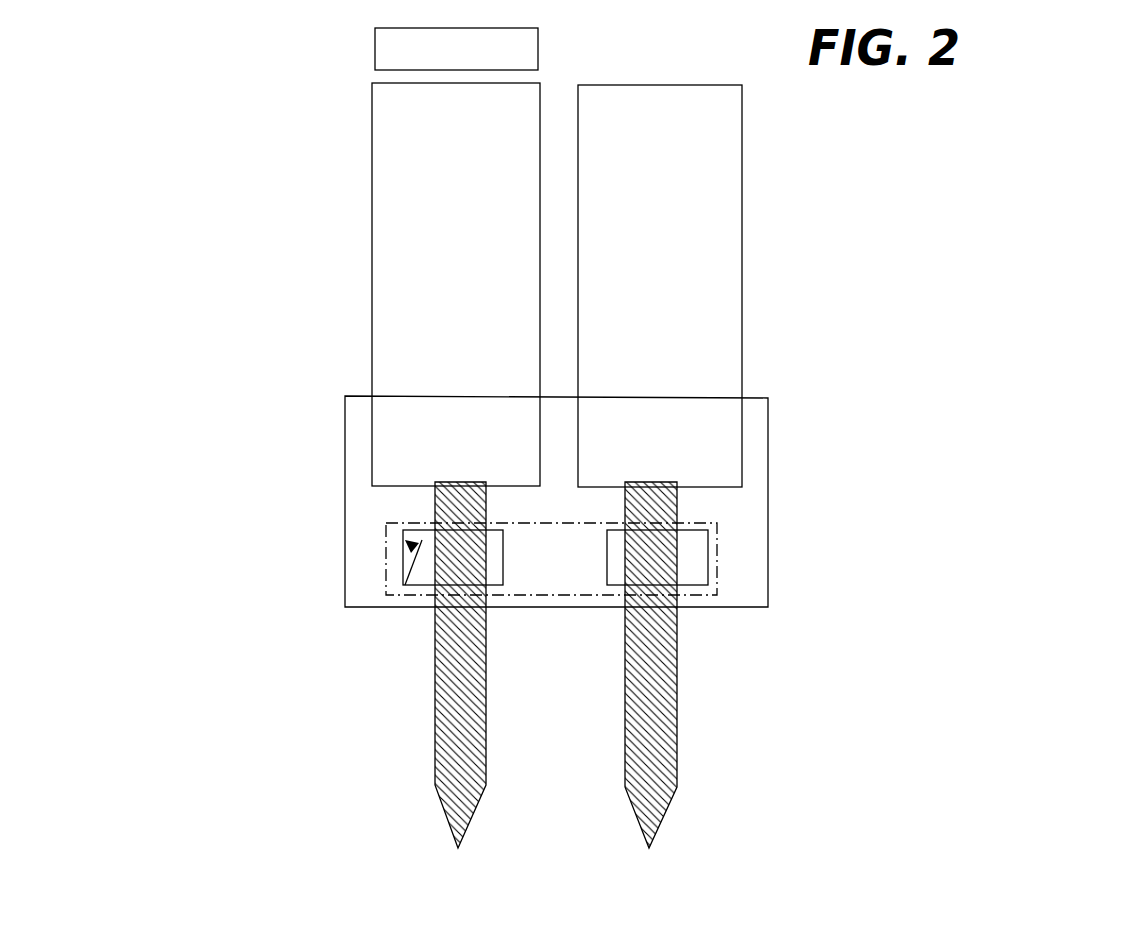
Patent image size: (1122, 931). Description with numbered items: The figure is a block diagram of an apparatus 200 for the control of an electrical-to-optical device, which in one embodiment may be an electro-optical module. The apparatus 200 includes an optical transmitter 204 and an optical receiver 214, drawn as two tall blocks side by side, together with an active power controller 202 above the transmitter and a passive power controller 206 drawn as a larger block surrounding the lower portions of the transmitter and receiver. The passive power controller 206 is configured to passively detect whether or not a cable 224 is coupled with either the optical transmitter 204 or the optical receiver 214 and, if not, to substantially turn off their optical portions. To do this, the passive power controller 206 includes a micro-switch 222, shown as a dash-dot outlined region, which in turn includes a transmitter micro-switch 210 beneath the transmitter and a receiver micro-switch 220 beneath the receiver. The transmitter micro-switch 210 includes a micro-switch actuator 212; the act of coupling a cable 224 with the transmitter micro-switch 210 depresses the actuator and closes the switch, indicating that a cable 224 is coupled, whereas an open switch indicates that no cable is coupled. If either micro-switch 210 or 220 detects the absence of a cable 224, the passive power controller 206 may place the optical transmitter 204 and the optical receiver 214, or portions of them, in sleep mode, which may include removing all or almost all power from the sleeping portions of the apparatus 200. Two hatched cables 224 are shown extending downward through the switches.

The apparatus 200 is at (900, 103).
The active power controller 202 is at (375, 52).
The optical transmitter 204 is at (372, 228).
The passive power controller 206 is at (345, 413).
The transmitter micro-switch 210 is at (386, 531).
The micro-switch actuator 212 is at (403, 573).
The optical receiver 214 is at (745, 222).
The receiver micro-switch 220 is at (713, 538).
The micro-switch 222 is at (717, 572).
The cable 224 is at (488, 743).